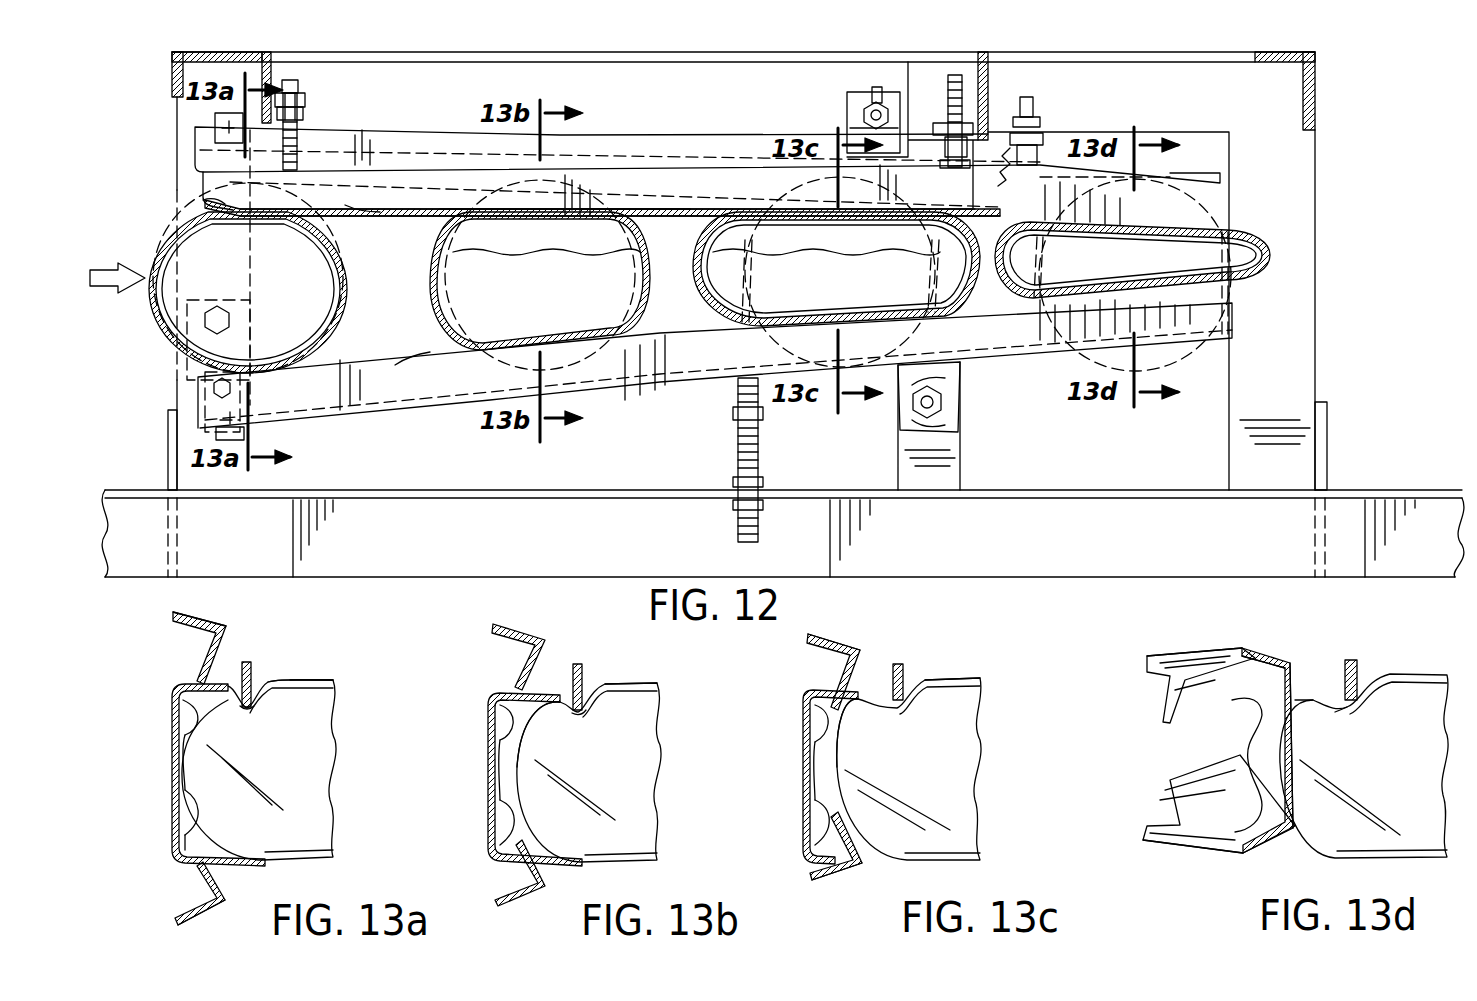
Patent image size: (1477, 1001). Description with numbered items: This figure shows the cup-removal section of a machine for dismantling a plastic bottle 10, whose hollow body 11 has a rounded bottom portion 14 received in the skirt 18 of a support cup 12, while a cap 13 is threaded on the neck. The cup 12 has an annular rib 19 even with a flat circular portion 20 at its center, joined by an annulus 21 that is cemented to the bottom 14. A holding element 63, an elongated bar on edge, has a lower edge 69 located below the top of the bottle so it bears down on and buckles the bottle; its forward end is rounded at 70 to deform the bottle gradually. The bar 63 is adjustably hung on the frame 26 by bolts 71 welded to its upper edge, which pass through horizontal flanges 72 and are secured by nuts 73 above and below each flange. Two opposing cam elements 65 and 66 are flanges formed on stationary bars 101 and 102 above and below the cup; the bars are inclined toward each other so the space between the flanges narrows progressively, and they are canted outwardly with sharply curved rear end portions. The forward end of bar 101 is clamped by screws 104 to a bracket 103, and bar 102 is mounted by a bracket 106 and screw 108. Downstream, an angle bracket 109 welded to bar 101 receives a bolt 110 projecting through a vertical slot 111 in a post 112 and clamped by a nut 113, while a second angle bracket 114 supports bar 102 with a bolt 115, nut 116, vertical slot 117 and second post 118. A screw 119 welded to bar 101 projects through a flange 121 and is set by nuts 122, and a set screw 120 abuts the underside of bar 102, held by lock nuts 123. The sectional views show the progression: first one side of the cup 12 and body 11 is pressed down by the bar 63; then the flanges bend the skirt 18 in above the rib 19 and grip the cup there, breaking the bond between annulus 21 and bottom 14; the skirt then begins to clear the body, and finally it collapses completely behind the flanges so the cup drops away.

In FIG. 12, the plastic bottle 10 is at (140, 334).
In FIG. 13a, the plastic bottle 10 is at (330, 665).
In FIG. 12, the hollow body 11 is at (342, 252).
In FIG. 13a, the hollow body 11 is at (335, 858).
In FIG. 13b, the hollow body 11 is at (650, 850).
In FIG. 13c, the hollow body 11 is at (960, 858).
In FIG. 13d, the hollow body 11 is at (1425, 676).
In FIG. 12, the support cup 12 is at (190, 210).
In FIG. 13a, the support cup 12 is at (245, 868).
In FIG. 13b, the support cup 12 is at (560, 845).
In FIG. 13c, the support cup 12 is at (845, 830).
In FIG. 13d, the support cup 12 is at (1270, 662).
In FIG. 12, the closure or cap 13 is at (300, 93).
In FIG. 13a, the bottom portion 14 is at (183, 702).
In FIG. 13b, the bottom portion 14 is at (535, 812).
In FIG. 13c, the bottom portion 14 is at (870, 848).
In FIG. 13d, the bottom portion 14 is at (1300, 740).
In FIG. 13a, the skirt 18 is at (240, 670).
In FIG. 13b, the skirt 18 is at (552, 688).
In FIG. 13c, the skirt 18 is at (860, 705).
In FIG. 13d, the skirt 18 is at (1335, 745).
In FIG. 13a, the annular rib 19 is at (178, 848).
In FIG. 13b, the annular rib 19 is at (492, 700).
In FIG. 13c, the annular rib 19 is at (805, 700).
In FIG. 13d, the annular rib 19 is at (1190, 697).
In FIG. 13a, the flat circular portion 20 is at (175, 752).
In FIG. 13b, the flat circular portion 20 is at (492, 757).
In FIG. 13c, the flat circular portion 20 is at (805, 785).
In FIG. 13d, the flat circular portion 20 is at (1245, 750).
In FIG. 13a, the annulus 21 is at (180, 810).
In FIG. 13b, the annulus 21 is at (495, 728).
In FIG. 13c, the annulus 21 is at (808, 728).
In FIG. 13d, the annulus 21 is at (1250, 795).
In FIG. 12, the frame 26 is at (377, 488).
In FIG. 12, the holding element 63 is at (652, 178).
In FIG. 13a, the holding element 63 is at (262, 680).
In FIG. 13b, the holding element 63 is at (590, 688).
In FIG. 13c, the holding element 63 is at (915, 690).
In FIG. 13d, the holding element 63 is at (1360, 685).
In FIG. 12, the cam element 65 is at (605, 135).
In FIG. 13a, the cam element 65 is at (200, 660).
In FIG. 13b, the cam element 65 is at (520, 670).
In FIG. 13c, the cam element 65 is at (835, 675).
In FIG. 13d, the cam element 65 is at (1288, 672).
In FIG. 12, the cam element 66 is at (395, 368).
In FIG. 13a, the cam element 66 is at (200, 882).
In FIG. 13b, the cam element 66 is at (520, 872).
In FIG. 13c, the cam element 66 is at (860, 835).
In FIG. 13d, the cam element 66 is at (1297, 812).
In FIG. 12, the lower edge 69 is at (362, 214).
In FIG. 13a, the lower edge 69 is at (255, 708).
In FIG. 13b, the lower edge 69 is at (580, 716).
In FIG. 12, the rounded portion 70 is at (235, 216).
In FIG. 12, the bolt 71 is at (300, 160).
In FIG. 12, the horizontal flange 72 is at (307, 108).
In FIG. 12, the nut 73 is at (945, 160).
In FIG. 12, the stationary bar 101 is at (438, 135).
In FIG. 13a, the stationary bar 101 is at (210, 618).
In FIG. 13c, the stationary bar 101 is at (840, 640).
In FIG. 13d, the stationary bar 101 is at (1222, 648).
In FIG. 12, the stationary bar 102 is at (392, 410).
In FIG. 13a, the stationary bar 102 is at (180, 925).
In FIG. 13c, the stationary bar 102 is at (848, 878).
In FIG. 13d, the stationary bar 102 is at (1205, 848).
In FIG. 12, the bracket 103 is at (200, 180).
In FIG. 12, the screw 104 is at (213, 112).
In FIG. 12, the bracket 106 is at (205, 382).
In FIG. 12, the screw 108 is at (218, 436).
In FIG. 12, the angle bracket 109 is at (855, 126).
In FIG. 12, the bolt 110 is at (865, 115).
In FIG. 12, the vertical slot 111 is at (877, 88).
In FIG. 12, the post 112 is at (850, 93).
In FIG. 12, the nut 113 is at (860, 106).
In FIG. 12, the second angle bracket 114 is at (950, 382).
In FIG. 12, the bolt 115 is at (945, 402).
In FIG. 12, the nut 116 is at (935, 410).
In FIG. 12, the vertical slot 117 is at (962, 438).
In FIG. 12, the second post 118 is at (898, 460).
In FIG. 12, the screw 119 is at (1000, 180).
In FIG. 12, the screw 120 is at (736, 426).
In FIG. 12, the flange 121 is at (1045, 120).
In FIG. 12, the nut 122 is at (1036, 102).
In FIG. 12, the lock nut 123 is at (736, 502).